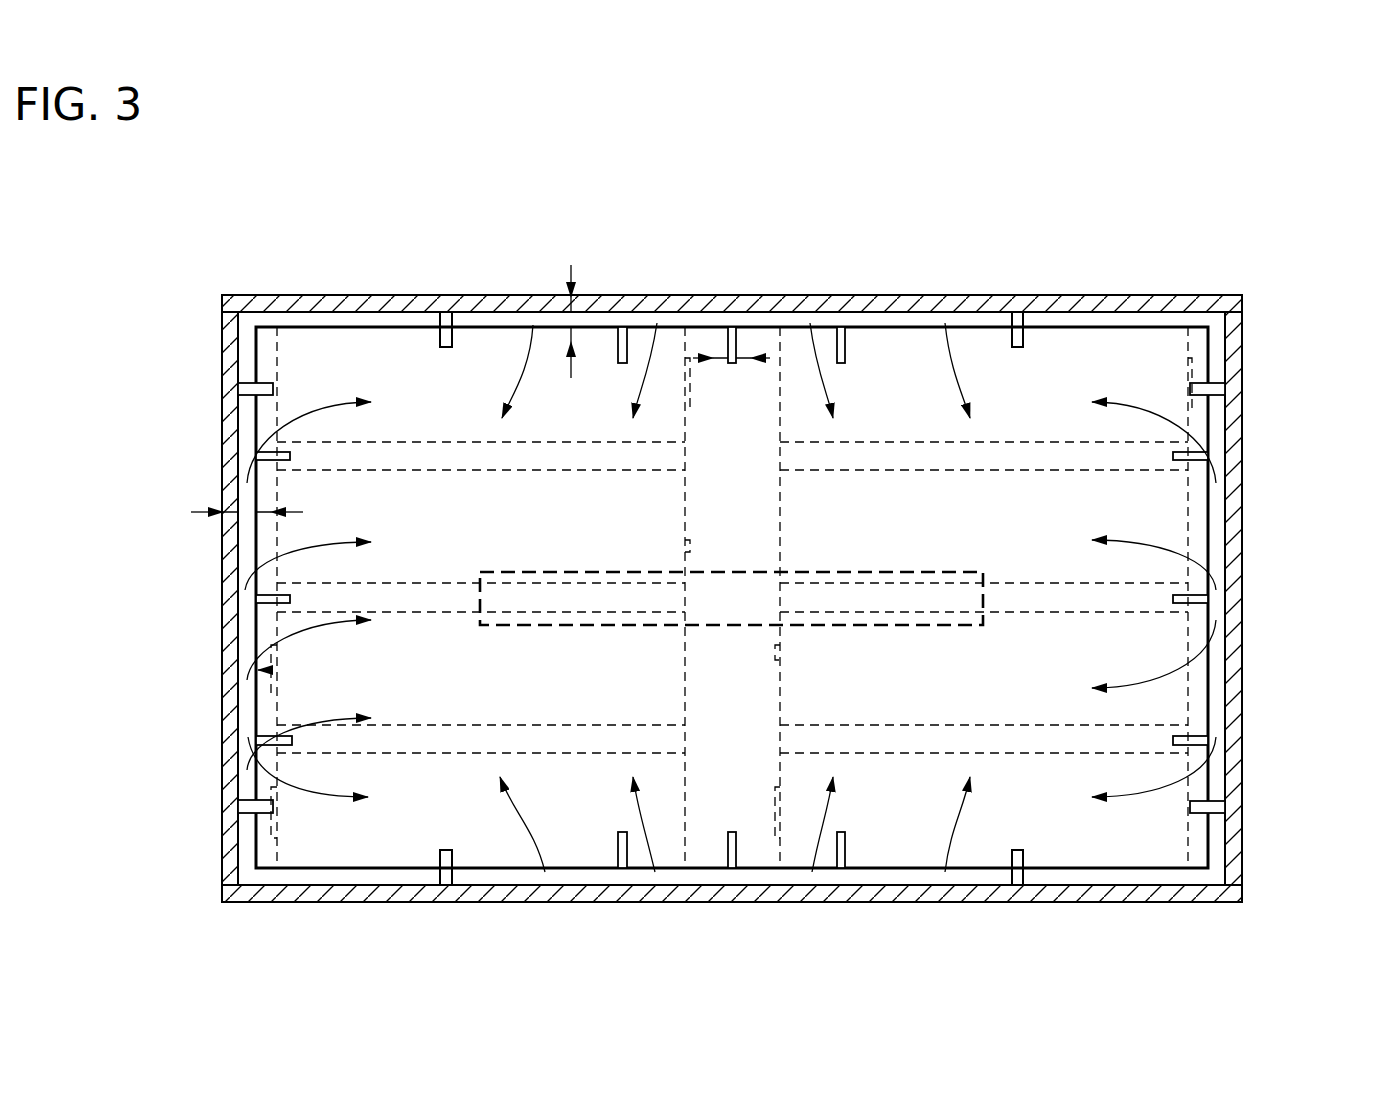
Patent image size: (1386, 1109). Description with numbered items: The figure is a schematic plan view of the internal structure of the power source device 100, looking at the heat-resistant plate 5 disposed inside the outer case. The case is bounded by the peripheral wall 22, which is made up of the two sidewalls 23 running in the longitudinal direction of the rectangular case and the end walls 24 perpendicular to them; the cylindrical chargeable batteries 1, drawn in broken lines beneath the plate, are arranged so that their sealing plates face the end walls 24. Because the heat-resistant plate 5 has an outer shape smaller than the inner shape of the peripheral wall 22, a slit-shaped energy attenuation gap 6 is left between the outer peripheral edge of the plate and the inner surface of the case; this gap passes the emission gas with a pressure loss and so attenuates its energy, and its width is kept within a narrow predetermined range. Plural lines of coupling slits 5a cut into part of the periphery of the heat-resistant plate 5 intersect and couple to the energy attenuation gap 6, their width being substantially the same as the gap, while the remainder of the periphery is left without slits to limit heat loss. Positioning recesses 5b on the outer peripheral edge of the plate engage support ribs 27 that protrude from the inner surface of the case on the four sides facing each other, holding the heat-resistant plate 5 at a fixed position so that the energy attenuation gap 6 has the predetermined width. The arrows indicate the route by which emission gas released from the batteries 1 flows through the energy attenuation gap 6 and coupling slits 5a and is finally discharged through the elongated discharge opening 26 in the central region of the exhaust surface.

The power source device 100 is at (1213, 143).
The peripheral wall 22 is at (1282, 192).
The sidewalls 23 is at (537, 296).
The end walls 24 is at (222, 452).
The support ribs 27 is at (440, 312).
The heat-resistant plate 5 is at (370, 845).
The coupling slits 5a is at (735, 324).
The positioning recesses 5b is at (444, 348).
The chargeable batteries 1 is at (460, 740).
The discharge opening 26 is at (741, 578).
The energy attenuation gap 6 is at (602, 320).